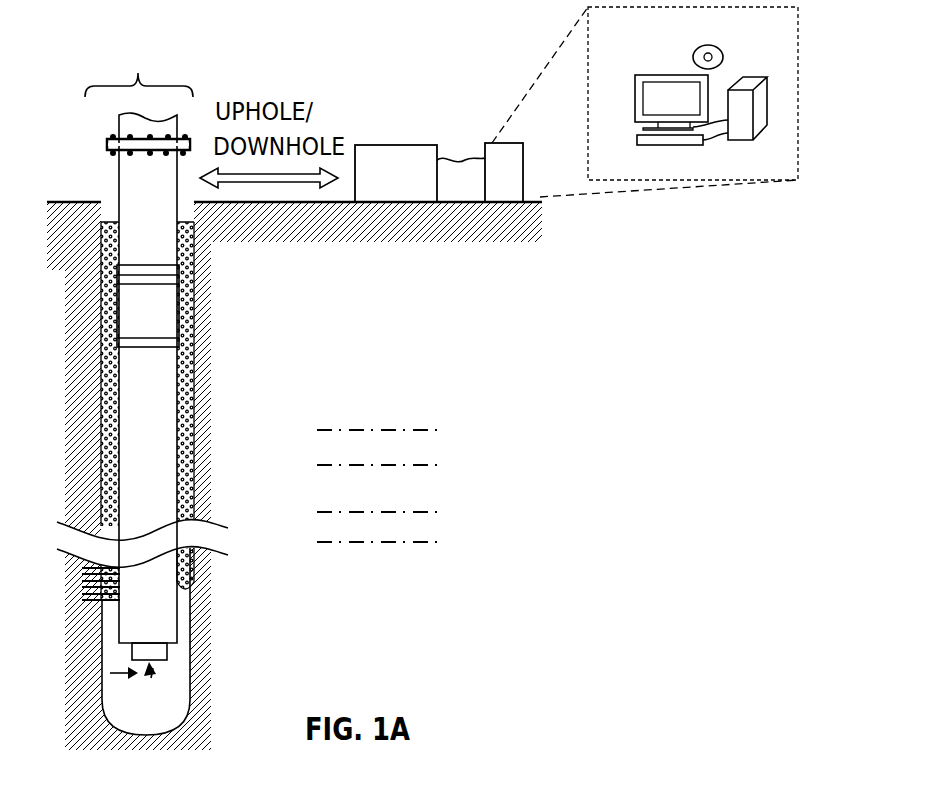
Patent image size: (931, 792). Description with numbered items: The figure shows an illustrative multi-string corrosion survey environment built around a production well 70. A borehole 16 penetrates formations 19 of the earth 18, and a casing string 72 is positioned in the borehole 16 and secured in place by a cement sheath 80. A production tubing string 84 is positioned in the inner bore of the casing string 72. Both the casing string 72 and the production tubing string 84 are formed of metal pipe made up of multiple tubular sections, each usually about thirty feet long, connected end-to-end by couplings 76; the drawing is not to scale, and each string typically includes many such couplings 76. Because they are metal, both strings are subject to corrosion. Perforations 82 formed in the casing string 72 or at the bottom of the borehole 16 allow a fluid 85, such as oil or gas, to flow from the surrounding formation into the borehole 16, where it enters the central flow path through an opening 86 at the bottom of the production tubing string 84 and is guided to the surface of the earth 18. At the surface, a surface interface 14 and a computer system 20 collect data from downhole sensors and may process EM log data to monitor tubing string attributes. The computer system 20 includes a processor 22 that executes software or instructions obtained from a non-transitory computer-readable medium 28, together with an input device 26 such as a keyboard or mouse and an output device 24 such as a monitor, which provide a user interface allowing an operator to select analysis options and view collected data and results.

The surface interface 14 is at (437, 185).
The borehole 16 is at (200, 272).
The earth 18 is at (85, 240).
The formations 19 is at (452, 417).
The computer system 20 is at (798, 98).
The processor 22 is at (757, 77).
The output device 24 is at (635, 100).
The input device 26 is at (695, 147).
The non-transitory computer-readable medium 28 is at (703, 47).
The well 70 is at (139, 68).
The casing string 72 is at (118, 182).
The couplings 76 is at (168, 323).
The cement annulus 80 is at (198, 472).
The perforations 82 is at (62, 562).
The production tubing string 84 is at (168, 652).
The fluid 85 is at (123, 682).
The opening 86 is at (153, 680).